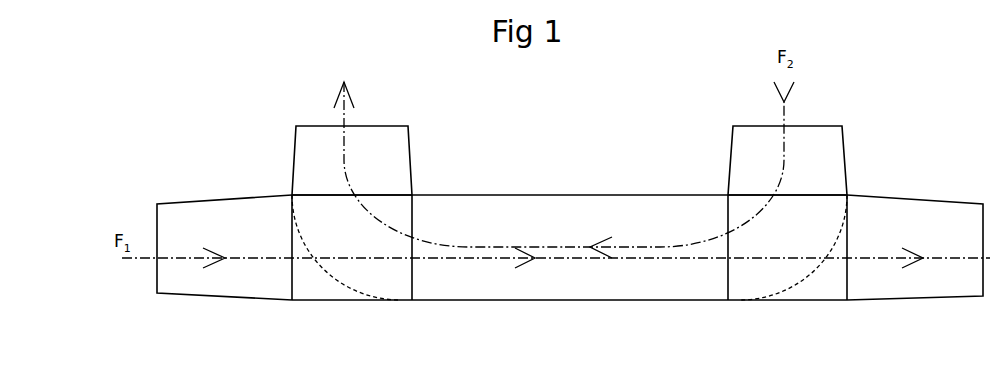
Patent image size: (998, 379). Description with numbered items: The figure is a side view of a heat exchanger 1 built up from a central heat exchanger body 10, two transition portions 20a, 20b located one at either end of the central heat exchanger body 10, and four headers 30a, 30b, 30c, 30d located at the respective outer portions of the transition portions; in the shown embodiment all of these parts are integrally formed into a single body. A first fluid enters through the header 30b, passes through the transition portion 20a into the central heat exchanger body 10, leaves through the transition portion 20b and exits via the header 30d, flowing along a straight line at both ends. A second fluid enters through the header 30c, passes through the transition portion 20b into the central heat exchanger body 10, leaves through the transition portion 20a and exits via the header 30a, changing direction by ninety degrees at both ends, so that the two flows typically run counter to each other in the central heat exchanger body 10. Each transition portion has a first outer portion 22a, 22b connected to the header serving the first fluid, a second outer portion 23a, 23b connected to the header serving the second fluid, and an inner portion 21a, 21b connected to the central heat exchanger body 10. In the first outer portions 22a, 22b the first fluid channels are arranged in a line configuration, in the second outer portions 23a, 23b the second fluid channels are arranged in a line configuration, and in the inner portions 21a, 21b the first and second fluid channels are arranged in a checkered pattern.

The heat exchanger 1 is at (586, 181).
The central heat exchanger body 10 is at (413, 316).
The transition portion 20a is at (294, 316).
The transition portion 20b is at (729, 316).
The inner portion 21a is at (414, 224).
The inner portion 21b is at (728, 222).
The first outer portion 22a is at (289, 268).
The first outer portion 22b is at (850, 275).
The second outer portion 23a is at (390, 193).
The second outer portion 23b is at (812, 195).
The header 30a is at (384, 156).
The header 30b is at (268, 217).
The header 30c is at (818, 155).
The header 30d is at (895, 210).